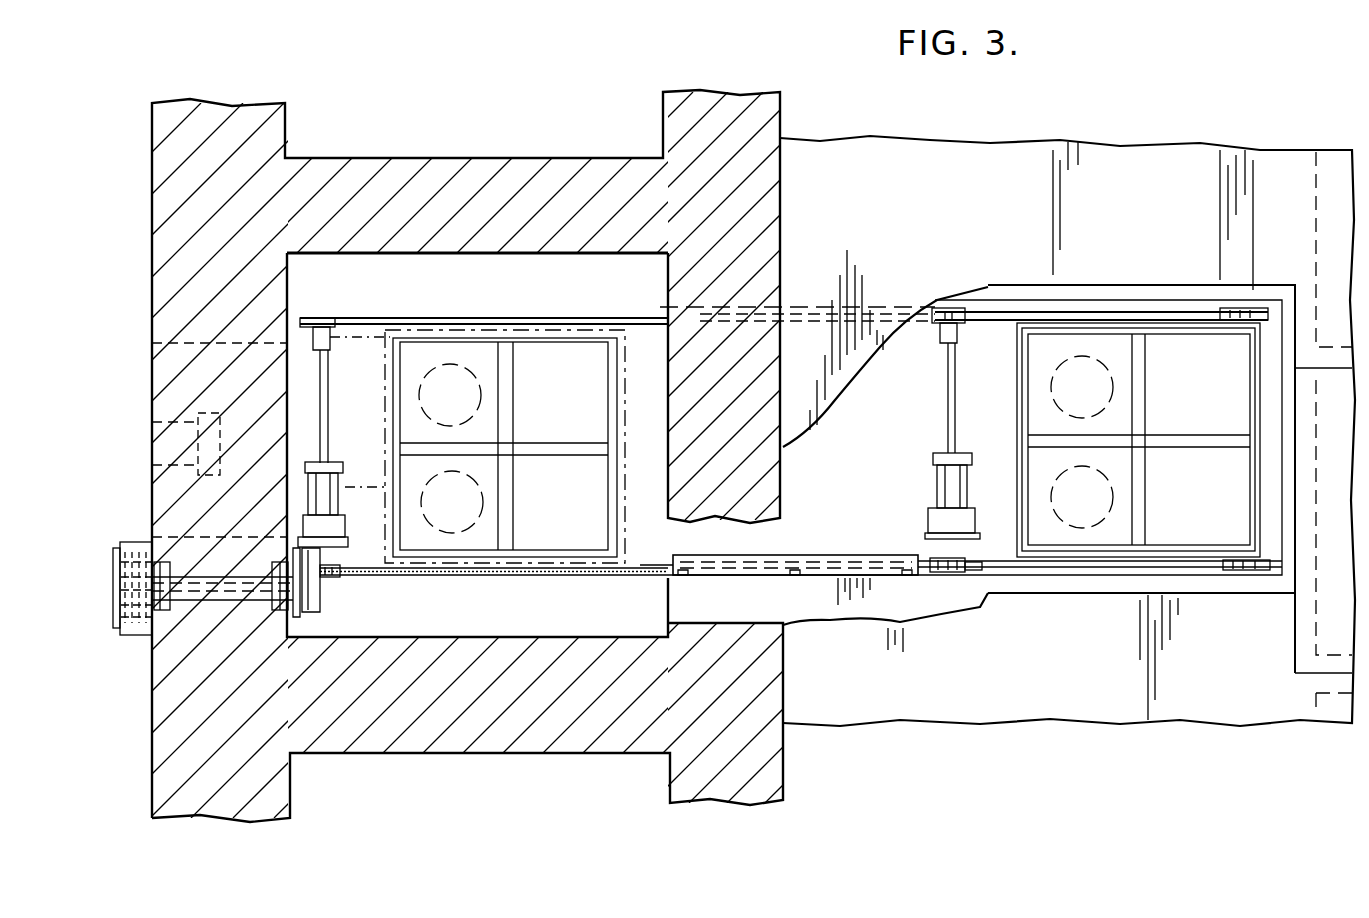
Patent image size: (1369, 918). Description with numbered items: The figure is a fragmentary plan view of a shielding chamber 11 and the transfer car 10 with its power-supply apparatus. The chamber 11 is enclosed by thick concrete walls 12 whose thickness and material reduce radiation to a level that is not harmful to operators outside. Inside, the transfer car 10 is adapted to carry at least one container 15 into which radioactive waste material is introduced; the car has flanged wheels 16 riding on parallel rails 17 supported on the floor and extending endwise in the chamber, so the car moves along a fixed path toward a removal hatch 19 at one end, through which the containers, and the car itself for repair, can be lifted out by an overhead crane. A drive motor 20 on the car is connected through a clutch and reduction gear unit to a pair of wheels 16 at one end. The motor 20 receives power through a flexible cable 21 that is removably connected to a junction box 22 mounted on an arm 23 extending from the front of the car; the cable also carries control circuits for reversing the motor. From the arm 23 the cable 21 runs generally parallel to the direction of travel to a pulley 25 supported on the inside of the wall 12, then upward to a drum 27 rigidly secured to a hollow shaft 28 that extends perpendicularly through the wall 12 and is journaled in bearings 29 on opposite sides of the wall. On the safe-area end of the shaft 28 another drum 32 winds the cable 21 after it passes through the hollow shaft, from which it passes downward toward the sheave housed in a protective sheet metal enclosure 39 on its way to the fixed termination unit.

The transfer car 10 is at (380, 408).
The shielding chamber 11 is at (494, 606).
The concrete walls 12 is at (547, 182).
The container 15 is at (613, 357).
The flanged wheels 16 is at (313, 317).
The rails 17 is at (533, 318).
The removal hatch 19 is at (1076, 286).
The drive motor 20 is at (364, 490).
The flexible cable 21 is at (548, 570).
The junction box 22 is at (975, 575).
The arm 23 is at (975, 548).
The pulley 25 is at (332, 578).
The drum 27 is at (320, 617).
The hollow shaft 28 is at (253, 598).
The bearings 29 is at (280, 562).
The drum 32 is at (118, 608).
The protective sheet metal enclosure 39 is at (123, 560).